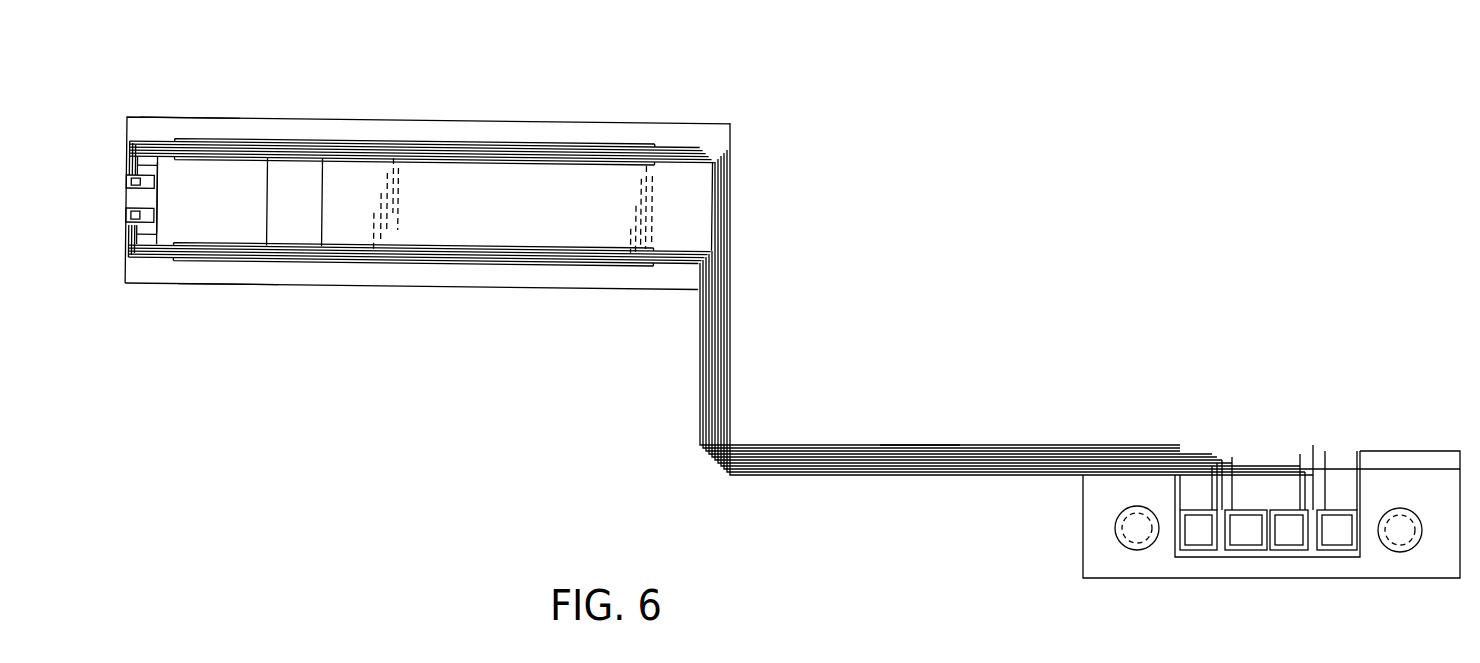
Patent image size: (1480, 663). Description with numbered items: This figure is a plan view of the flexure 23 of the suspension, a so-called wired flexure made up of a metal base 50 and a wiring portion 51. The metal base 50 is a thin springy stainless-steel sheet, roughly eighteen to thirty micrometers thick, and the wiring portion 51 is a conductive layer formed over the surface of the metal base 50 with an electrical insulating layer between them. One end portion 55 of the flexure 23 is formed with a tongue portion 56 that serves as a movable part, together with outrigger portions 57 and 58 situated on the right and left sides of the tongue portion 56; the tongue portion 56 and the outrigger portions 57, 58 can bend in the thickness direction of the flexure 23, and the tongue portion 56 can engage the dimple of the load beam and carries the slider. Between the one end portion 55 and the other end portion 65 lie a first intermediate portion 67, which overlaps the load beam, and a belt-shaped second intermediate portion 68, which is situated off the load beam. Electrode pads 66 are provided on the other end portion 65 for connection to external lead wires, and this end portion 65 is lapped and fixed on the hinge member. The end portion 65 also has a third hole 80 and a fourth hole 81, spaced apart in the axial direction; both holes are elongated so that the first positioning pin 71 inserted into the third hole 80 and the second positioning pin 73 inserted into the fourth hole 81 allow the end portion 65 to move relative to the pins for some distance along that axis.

The flexure 23 is at (703, 120).
The metal base 50 is at (432, 264).
The wiring portion 51 is at (572, 146).
The one end portion 55 is at (122, 198).
The tongue portion 56 is at (248, 168).
The outrigger portion 57 is at (190, 118).
The outrigger portion 58 is at (227, 285).
The other end portion 65 is at (1405, 461).
The electrode pads 66 is at (1336, 538).
The first intermediate portion 67 is at (431, 121).
The second intermediate portion 68 is at (922, 446).
The first positioning pin 71 is at (1395, 549).
The second positioning pin 73 is at (1131, 547).
The third hole 80 is at (1411, 547).
The fourth hole 81 is at (1148, 549).